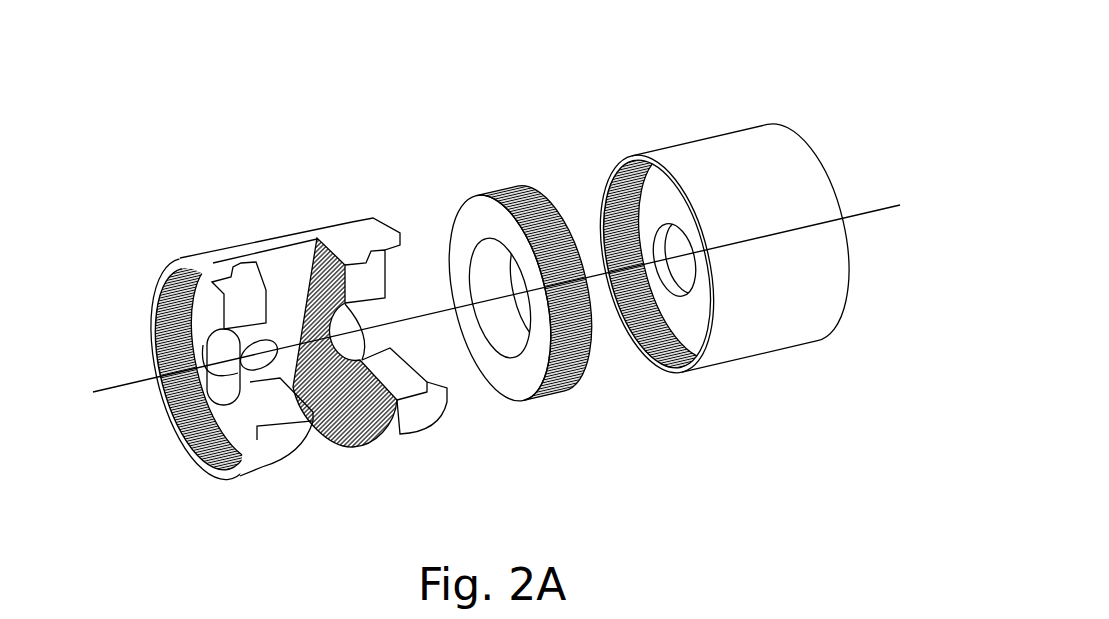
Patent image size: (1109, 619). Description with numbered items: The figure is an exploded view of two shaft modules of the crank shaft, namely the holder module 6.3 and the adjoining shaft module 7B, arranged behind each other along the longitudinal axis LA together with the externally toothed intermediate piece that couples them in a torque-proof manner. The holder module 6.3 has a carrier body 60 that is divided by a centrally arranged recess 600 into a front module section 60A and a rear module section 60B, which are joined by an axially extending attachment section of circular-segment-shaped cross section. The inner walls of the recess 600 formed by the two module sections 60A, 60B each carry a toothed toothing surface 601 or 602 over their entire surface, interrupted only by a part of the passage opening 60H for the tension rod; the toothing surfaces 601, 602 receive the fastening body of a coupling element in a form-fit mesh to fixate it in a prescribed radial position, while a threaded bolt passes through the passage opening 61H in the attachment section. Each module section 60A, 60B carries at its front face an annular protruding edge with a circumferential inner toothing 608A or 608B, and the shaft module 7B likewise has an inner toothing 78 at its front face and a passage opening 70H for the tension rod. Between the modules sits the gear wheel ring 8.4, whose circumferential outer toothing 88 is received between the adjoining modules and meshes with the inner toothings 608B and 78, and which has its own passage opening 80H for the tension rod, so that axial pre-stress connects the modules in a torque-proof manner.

The longitudinal axis LA is at (93, 392).
The shaft module 7B is at (729, 151).
The inner toothing 78 is at (610, 180).
The passage opening 70H is at (684, 290).
The outer toothing 88 is at (513, 190).
The passage opening 80H is at (513, 354).
The gear wheel ring 8.4 is at (584, 398).
The carrier body 60 is at (289, 352).
The module section 60A is at (197, 373).
The module section 60B is at (410, 333).
The recess 600 is at (285, 238).
The holder module 6.3 is at (331, 222).
The toothing surface 601 is at (312, 448).
The toothing surface 602 is at (366, 437).
The inner toothing 608A is at (157, 305).
The inner toothing 608B is at (447, 380).
The passage opening 60H is at (213, 440).
The passage opening 61H is at (218, 388).